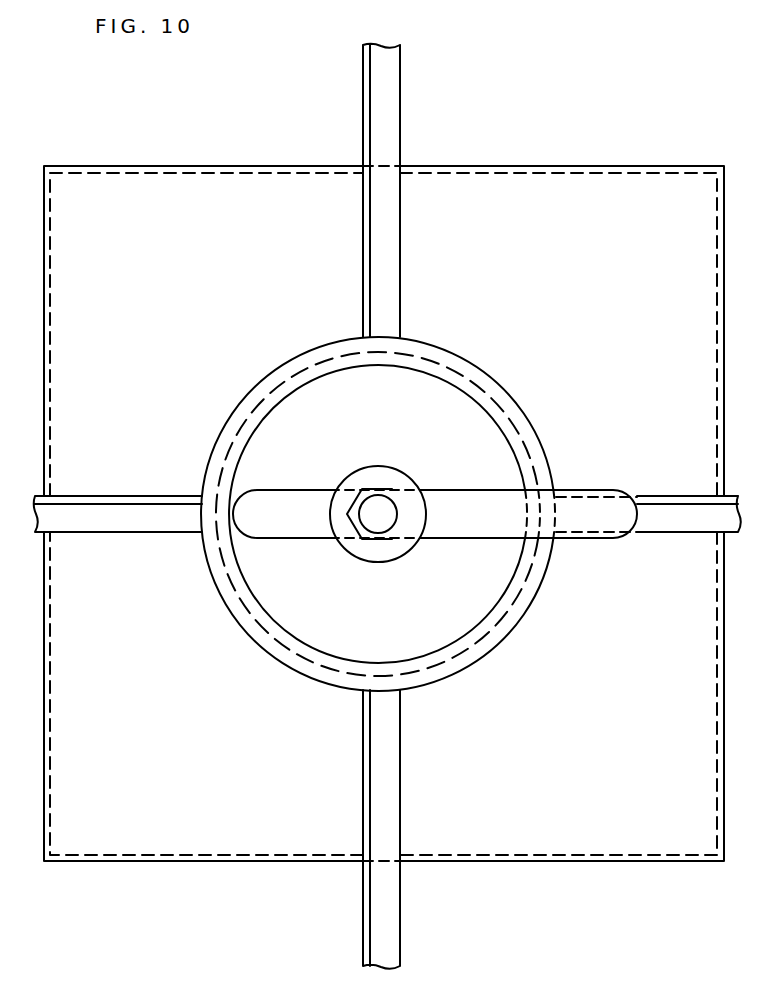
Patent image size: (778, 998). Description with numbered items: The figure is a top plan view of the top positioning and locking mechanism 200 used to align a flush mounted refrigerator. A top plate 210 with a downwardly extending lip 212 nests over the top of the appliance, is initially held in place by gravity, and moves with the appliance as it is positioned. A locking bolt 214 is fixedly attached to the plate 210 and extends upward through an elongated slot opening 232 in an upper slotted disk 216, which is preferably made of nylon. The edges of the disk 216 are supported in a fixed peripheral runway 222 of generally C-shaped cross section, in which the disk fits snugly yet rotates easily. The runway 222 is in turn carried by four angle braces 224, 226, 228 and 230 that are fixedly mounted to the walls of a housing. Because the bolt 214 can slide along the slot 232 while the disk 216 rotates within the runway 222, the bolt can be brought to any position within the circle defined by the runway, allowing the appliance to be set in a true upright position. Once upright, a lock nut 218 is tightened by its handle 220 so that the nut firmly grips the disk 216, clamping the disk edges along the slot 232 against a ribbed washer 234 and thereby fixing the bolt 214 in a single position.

The pressure sensor assembly 200 is at (543, 117).
The top plate 210 is at (165, 254).
The downwardly extending lip 212 is at (223, 165).
The locking bolt 214 is at (383, 510).
The upper slotted disk 216 is at (303, 592).
The lock nut 218 is at (370, 540).
The handle 220 is at (587, 488).
The fixed peripheral runway 222 is at (492, 398).
The angle brace 224 is at (403, 241).
The angle brace 226 is at (665, 496).
The angle brace 228 is at (403, 753).
The angle brace 230 is at (108, 525).
The elongated slot opening 232 is at (277, 508).
The ribbed washer 234 is at (403, 555).